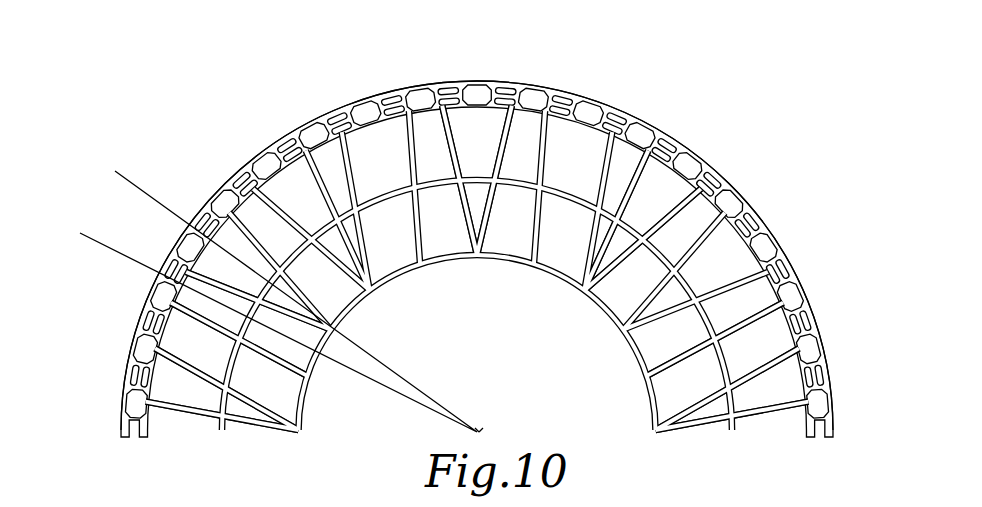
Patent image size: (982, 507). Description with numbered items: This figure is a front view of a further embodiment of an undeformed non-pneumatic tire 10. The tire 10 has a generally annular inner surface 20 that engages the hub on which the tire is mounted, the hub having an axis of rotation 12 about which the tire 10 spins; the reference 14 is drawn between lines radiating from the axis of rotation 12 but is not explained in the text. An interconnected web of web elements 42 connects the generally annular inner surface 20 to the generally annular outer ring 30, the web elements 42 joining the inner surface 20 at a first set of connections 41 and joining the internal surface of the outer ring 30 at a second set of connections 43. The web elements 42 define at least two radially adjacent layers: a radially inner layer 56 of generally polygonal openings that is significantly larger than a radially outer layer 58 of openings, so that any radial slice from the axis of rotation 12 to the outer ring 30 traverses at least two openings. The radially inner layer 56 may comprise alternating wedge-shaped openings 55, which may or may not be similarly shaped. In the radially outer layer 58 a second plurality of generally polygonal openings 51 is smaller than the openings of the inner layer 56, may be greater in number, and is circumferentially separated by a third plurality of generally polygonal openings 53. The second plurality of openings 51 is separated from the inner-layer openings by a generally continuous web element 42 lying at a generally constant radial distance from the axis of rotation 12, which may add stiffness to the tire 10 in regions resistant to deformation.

The non-pneumatic tire 10 is at (469, 228).
The axis of rotation 12 is at (480, 432).
The angular extent 14 is at (112, 176).
The generally annular inner surface 20 is at (372, 300).
The generally annular outer ring 30 is at (297, 128).
The first set of connections 41 is at (478, 262).
The web element 42 is at (231, 200).
The second set of connections 43 is at (346, 113).
The second plurality of generally polygonal openings 51 is at (190, 331).
The third plurality of generally polygonal openings 53 is at (614, 114).
The wedge-shaped openings 55 is at (587, 170).
The radially inner layer 56 is at (688, 403).
The radially outer layer 58 is at (806, 270).